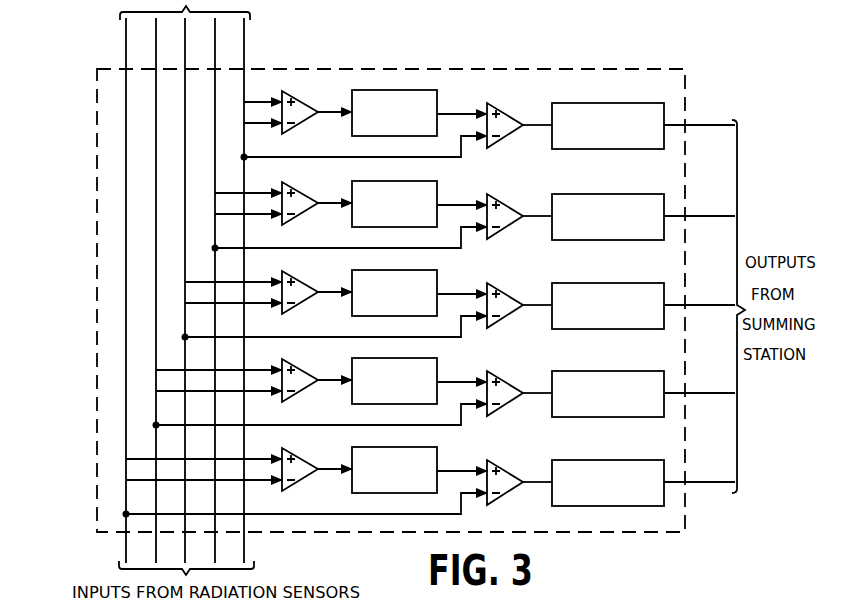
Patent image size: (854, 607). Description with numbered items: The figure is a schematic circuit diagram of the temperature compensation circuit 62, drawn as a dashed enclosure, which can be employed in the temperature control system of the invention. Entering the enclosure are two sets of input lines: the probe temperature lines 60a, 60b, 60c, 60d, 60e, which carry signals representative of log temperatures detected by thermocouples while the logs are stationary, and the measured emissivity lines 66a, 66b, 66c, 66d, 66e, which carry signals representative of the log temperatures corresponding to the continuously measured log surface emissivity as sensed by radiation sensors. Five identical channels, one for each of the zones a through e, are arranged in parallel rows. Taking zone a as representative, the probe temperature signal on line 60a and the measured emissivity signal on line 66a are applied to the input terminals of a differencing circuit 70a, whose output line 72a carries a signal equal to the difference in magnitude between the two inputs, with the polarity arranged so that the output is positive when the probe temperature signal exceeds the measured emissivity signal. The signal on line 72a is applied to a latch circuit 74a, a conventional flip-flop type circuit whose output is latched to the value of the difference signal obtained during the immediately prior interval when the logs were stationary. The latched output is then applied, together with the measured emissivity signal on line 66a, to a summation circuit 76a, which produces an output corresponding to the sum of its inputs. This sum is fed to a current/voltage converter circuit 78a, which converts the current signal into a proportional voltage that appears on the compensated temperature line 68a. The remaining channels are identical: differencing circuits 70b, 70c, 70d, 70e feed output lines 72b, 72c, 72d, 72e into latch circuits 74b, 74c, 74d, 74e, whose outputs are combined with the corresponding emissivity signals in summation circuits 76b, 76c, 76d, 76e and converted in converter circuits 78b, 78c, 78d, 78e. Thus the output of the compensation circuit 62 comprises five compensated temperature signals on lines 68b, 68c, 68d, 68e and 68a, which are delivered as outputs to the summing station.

The probe temperature line 60a is at (245, 30).
The probe temperature line 60b is at (215, 42).
The probe temperature line 60c is at (186, 53).
The probe temperature line 60d is at (156, 32).
The probe temperature line 60e is at (126, 45).
The temperature compensation circuit 62 is at (505, 69).
The measured emissivity line 66a is at (246, 536).
The measured emissivity line 66b is at (215, 545).
The measured emissivity line 66c is at (185, 538).
The measured emissivity line 66d is at (156, 548).
The measured emissivity line 66e is at (126, 555).
The compensated temperature line 68a is at (712, 125).
The compensated temperature line 68b is at (712, 216).
The compensated temperature line 68c is at (712, 305).
The compensated temperature line 68d is at (712, 393).
The compensated temperature line 68e is at (712, 482).
The differencing circuit 70a is at (302, 122).
The differencing circuit 70b is at (302, 213).
The differencing circuit 70c is at (302, 302).
The differencing circuit 70d is at (302, 390).
The differencing circuit 70e is at (302, 479).
The output line 72a is at (327, 108).
The output line 72b is at (327, 199).
The output line 72c is at (327, 288).
The output line 72d is at (327, 376).
The output line 72e is at (327, 465).
The latch circuit 74a is at (422, 137).
The latch circuit 74b is at (422, 228).
The latch circuit 74c is at (422, 317).
The latch circuit 74d is at (422, 405).
The latch circuit 74e is at (422, 494).
The summation circuit 76a is at (512, 113).
The summation circuit 76b is at (512, 204).
The summation circuit 76c is at (512, 293).
The summation circuit 76d is at (512, 381).
The summation circuit 76e is at (512, 470).
The current/voltage converter circuit 78a is at (633, 103).
The current/voltage converter circuit 78b is at (615, 194).
The current/voltage converter circuit 78c is at (615, 283).
The current/voltage converter circuit 78d is at (615, 371).
The current/voltage converter circuit 78e is at (615, 460).